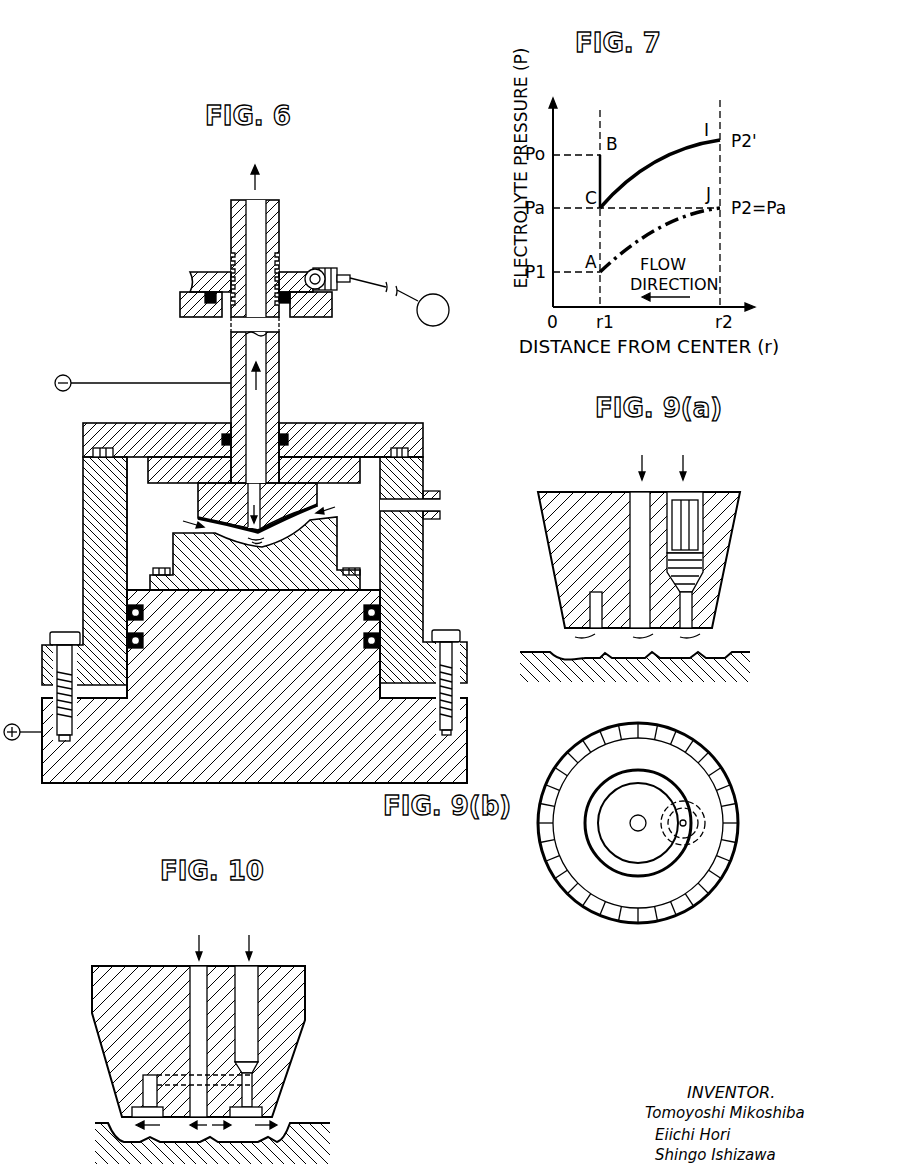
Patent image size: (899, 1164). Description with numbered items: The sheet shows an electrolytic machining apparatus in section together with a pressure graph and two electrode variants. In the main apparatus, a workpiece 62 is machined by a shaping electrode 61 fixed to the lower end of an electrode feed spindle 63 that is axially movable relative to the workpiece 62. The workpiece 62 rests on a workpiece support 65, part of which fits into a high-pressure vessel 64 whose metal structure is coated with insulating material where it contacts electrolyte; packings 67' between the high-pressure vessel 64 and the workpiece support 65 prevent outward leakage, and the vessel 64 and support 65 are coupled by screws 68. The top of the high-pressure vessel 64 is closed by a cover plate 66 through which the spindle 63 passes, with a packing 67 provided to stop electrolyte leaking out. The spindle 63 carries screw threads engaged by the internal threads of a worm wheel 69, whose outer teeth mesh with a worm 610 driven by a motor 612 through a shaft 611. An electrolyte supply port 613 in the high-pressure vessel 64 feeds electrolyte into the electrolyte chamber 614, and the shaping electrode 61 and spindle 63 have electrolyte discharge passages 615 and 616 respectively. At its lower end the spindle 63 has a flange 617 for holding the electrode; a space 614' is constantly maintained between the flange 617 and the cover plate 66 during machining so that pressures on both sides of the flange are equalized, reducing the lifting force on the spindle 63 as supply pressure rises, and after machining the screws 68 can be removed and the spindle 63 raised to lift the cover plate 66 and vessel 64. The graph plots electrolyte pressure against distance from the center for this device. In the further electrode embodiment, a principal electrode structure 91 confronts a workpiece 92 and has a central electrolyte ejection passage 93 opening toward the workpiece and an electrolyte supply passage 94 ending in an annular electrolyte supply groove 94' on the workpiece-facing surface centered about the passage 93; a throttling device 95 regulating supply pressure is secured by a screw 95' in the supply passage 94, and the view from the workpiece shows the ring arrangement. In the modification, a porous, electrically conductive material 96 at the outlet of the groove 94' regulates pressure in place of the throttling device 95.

In FIG. 6, the shaping electrode 61 is at (318, 503).
In FIG. 6, the workpiece 62 is at (318, 547).
In FIG. 6, the electrode feed spindle 63 is at (278, 370).
In FIG. 6, the high-pressure vessel 64 is at (88, 530).
In FIG. 6, the workpiece support 65 is at (460, 738).
In FIG. 6, the cover plate 66 is at (408, 425).
In FIG. 6, the packing 67 is at (280, 440).
In FIG. 6, the packings 67' is at (295, 615).
In FIG. 6, the screws 68 is at (452, 632).
In FIG. 6, the worm wheel 69 is at (288, 274).
In FIG. 6, the worm 610 is at (325, 272).
In FIG. 6, the shaft 611 is at (400, 292).
In FIG. 6, the motor 612 is at (447, 305).
In FIG. 6, the electrolyte supply port 613 is at (438, 505).
In FIG. 6, the electrolyte chamber 614 is at (84, 523).
In FIG. 6, the upper chamber 614' is at (351, 421).
In FIG. 6, the electrolyte discharge passage 615 is at (205, 505).
In FIG. 6, the electrolyte discharge passage 616 is at (255, 222).
In FIG. 6, the flange 617 is at (185, 470).
In FIG. 9a, the principal electrode structure 91 is at (573, 492).
In FIG. 9b, the principal electrode structure 91 is at (722, 795).
In FIG. 10, the principal electrode structure 91 is at (150, 966).
In FIG. 9a, the workpiece 92 is at (735, 660).
In FIG. 10, the workpiece 92 is at (292, 1138).
In FIG. 9a, the electrolyte ejection passage 93 is at (637, 492).
In FIG. 9b, the electrolyte ejection passage 93 is at (634, 828).
In FIG. 10, the electrolyte ejection passage 93 is at (198, 975).
In FIG. 9a, the electrolyte supply passage 94 is at (697, 494).
In FIG. 9b, the electrolyte supply passage 94 is at (682, 823).
In FIG. 10, the electrolyte supply passage 94 is at (262, 993).
In FIG. 9a, the annular electrolyte supply groove 94' is at (682, 608).
In FIG. 9b, the annular electrolyte supply groove 94' is at (630, 809).
In FIG. 10, the annular electrolyte supply groove 94' is at (160, 1090).
In FIG. 9a, the throttling device 95 is at (716, 504).
In FIG. 9b, the throttling device 95 is at (679, 853).
In FIG. 9a, the screw 95' is at (725, 569).
In FIG. 9b, the screw 95' is at (681, 800).
In FIG. 10, the porous electrically conductive material 96 is at (262, 1108).